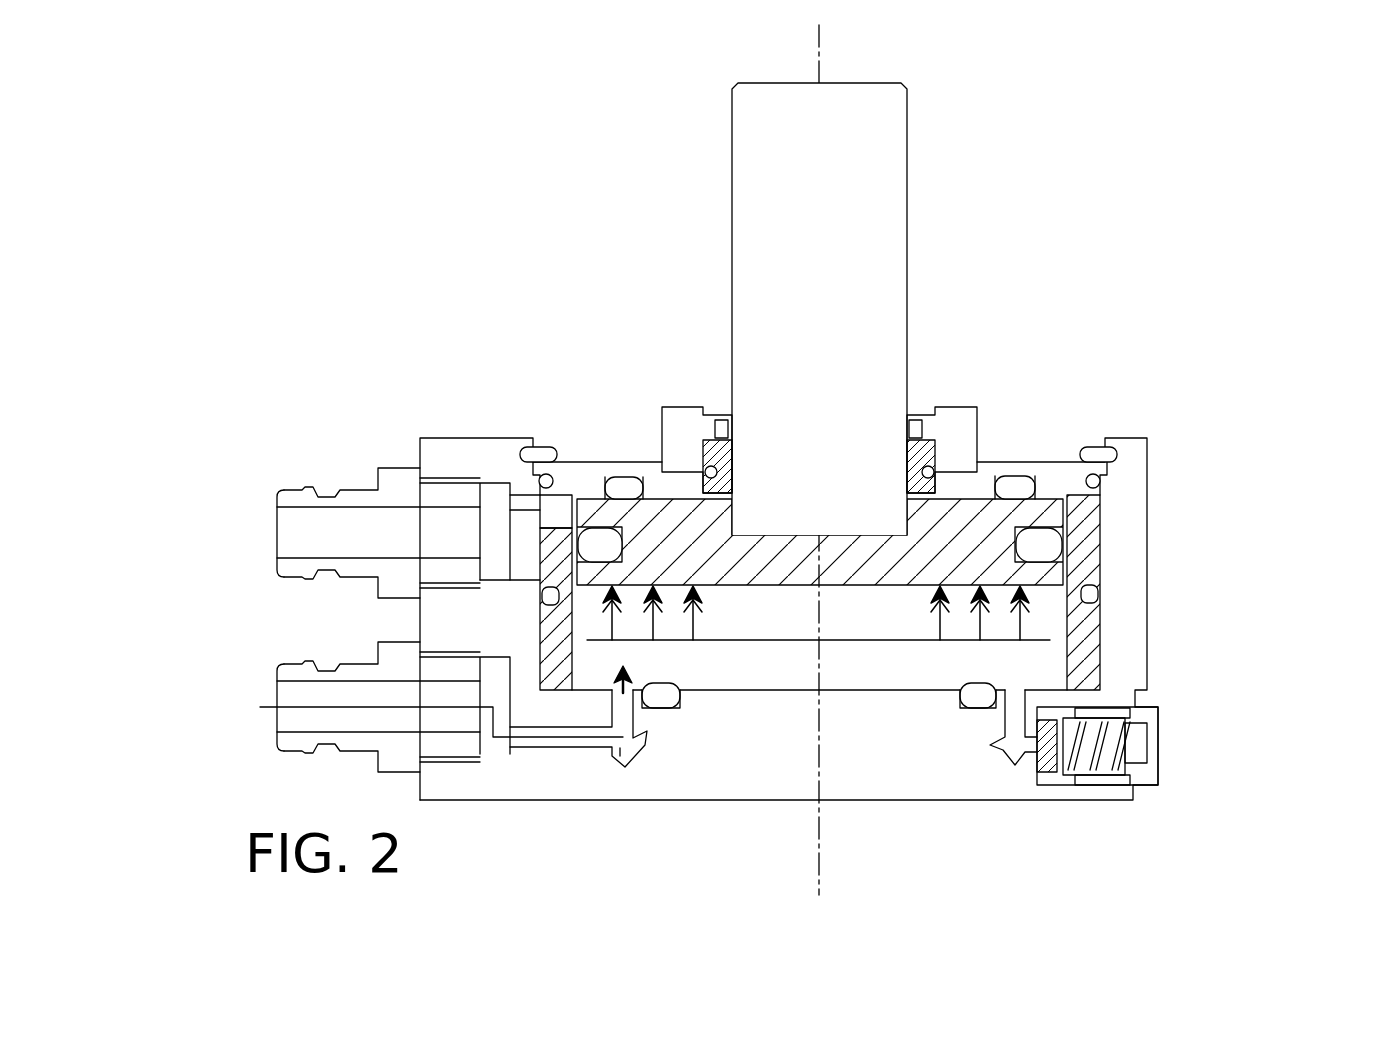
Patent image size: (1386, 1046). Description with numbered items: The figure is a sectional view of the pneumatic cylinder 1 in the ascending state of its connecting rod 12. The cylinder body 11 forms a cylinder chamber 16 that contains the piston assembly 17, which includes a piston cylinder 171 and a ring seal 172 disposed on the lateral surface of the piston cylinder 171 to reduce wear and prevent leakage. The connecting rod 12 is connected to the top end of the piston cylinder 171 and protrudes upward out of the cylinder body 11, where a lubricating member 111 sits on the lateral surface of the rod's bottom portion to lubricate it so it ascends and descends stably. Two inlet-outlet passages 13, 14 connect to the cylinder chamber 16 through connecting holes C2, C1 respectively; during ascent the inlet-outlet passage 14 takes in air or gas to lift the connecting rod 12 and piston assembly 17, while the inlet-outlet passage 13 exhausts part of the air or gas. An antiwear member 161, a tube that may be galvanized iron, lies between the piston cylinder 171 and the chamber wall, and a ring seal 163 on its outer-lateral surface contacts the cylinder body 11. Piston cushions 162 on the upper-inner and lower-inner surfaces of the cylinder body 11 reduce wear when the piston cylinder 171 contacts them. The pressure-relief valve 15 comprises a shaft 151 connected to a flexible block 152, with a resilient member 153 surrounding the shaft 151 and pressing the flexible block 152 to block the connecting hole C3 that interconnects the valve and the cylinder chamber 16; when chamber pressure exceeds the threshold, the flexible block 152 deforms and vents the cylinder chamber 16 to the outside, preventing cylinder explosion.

The pneumatic cylinder 1 is at (338, 207).
The cylinder body 11 is at (1117, 552).
The connecting rod 12 is at (858, 156).
The inlet-outlet passage 13 is at (295, 540).
The inlet-outlet passage 14 is at (295, 700).
The pressure-relief valve 15 is at (1185, 760).
The cylinder chamber 16 is at (913, 592).
The piston assembly 17 is at (1112, 422).
The lubricating member 111 is at (918, 440).
The shaft 151 is at (1135, 746).
The flexible block 152 is at (1090, 742).
The resilient member 153 is at (1125, 728).
The antiwear member 161 is at (1090, 633).
The piston cushion 162 is at (628, 485).
The ring seal 163 is at (1095, 592).
The piston cylinder 171 is at (1090, 490).
The ring seal 172 is at (1030, 540).
The connecting hole C1 is at (618, 768).
The connecting hole C2 is at (558, 513).
The connecting hole C3 is at (1010, 748).